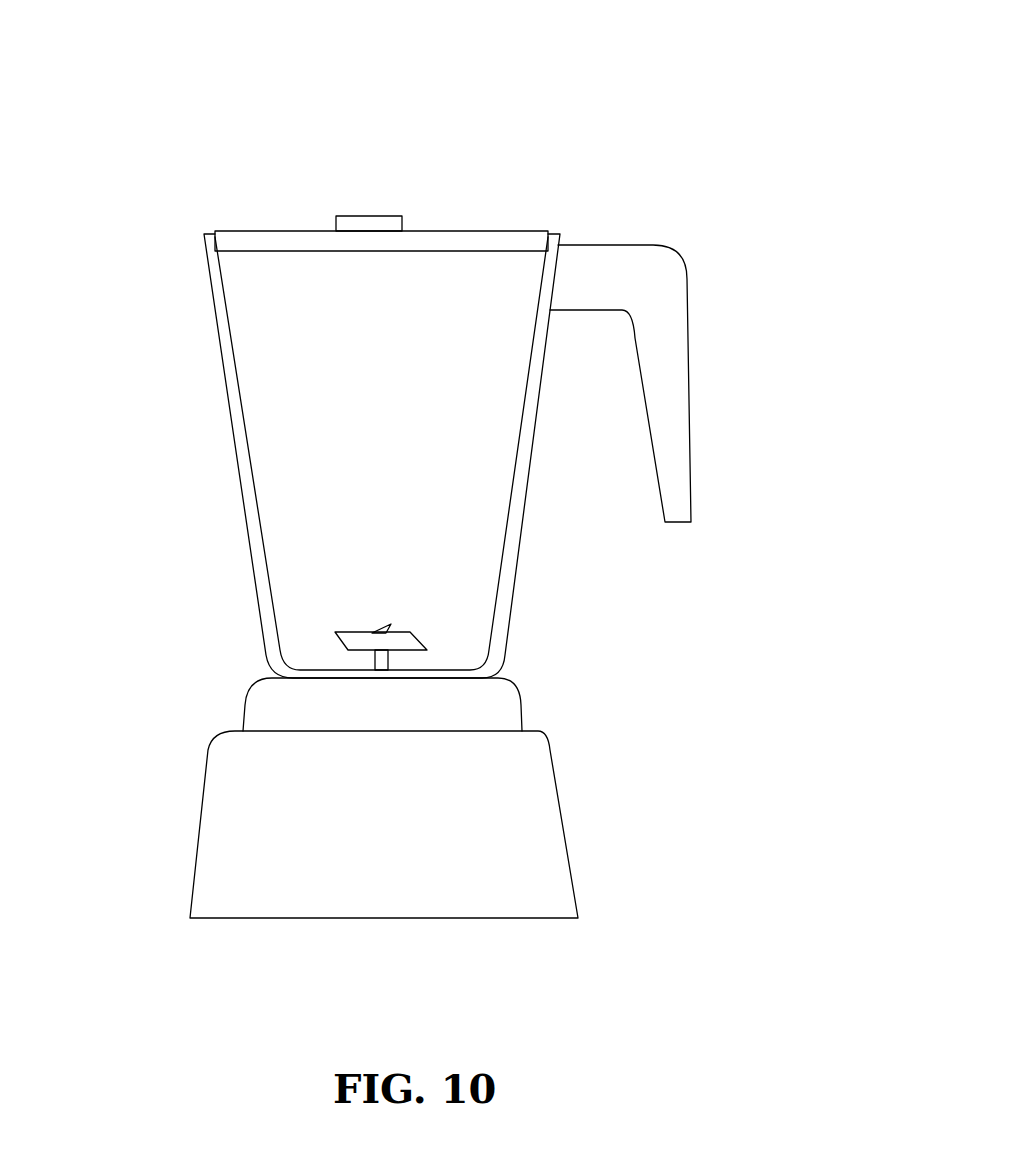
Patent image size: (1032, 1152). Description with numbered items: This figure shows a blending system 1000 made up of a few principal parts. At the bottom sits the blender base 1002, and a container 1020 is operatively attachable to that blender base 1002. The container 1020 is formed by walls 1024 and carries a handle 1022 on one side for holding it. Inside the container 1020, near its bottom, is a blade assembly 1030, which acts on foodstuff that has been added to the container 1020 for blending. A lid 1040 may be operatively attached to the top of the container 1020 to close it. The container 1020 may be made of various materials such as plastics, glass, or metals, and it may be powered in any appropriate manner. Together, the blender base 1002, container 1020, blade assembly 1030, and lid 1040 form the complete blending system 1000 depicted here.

The blending system 1000 is at (552, 102).
The blender base 1002 is at (547, 761).
The container 1020 is at (156, 396).
The handle 1022 is at (673, 292).
The walls 1024 is at (222, 345).
The blade assembly 1030 is at (311, 612).
The lid 1040 is at (273, 199).